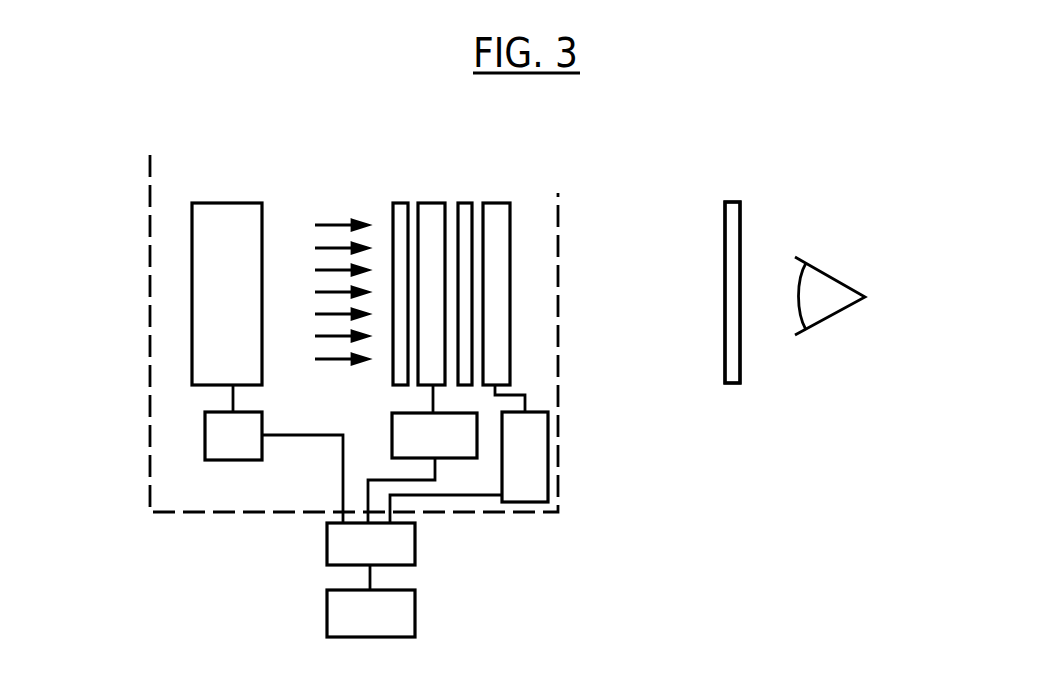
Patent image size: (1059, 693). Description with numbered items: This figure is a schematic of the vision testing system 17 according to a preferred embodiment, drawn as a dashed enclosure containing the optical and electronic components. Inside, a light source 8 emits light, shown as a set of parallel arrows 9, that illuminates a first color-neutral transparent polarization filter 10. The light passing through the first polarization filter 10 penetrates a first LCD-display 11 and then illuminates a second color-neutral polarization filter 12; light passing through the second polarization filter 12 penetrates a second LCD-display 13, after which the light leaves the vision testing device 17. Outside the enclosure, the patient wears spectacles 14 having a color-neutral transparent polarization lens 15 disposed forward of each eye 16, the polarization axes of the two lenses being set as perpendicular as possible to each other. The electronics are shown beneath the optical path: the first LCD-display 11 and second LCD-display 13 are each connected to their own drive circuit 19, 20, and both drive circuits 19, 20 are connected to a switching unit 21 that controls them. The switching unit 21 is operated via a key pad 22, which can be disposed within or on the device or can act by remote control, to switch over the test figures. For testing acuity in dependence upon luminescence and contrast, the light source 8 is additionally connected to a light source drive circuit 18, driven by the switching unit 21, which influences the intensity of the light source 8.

The light source 8 is at (225, 218).
The light beam arrows 9 is at (343, 225).
The first color-neutral transparent polarization filter 10 is at (399, 210).
The first LCD-display 11 is at (431, 210).
The second color-neutral polarization filter 12 is at (464, 210).
The second LCD-display 13 is at (496, 210).
The spectacles 14 is at (720, 190).
The polarization lens 15 is at (731, 200).
The eye 16 is at (828, 292).
The vision testing system 17 is at (150, 207).
The light source drive circuit 18 is at (219, 449).
The drive circuit 19 is at (421, 448).
The drive circuit 20 is at (511, 467).
The switching unit 21 is at (357, 557).
The key pad 22 is at (357, 626).